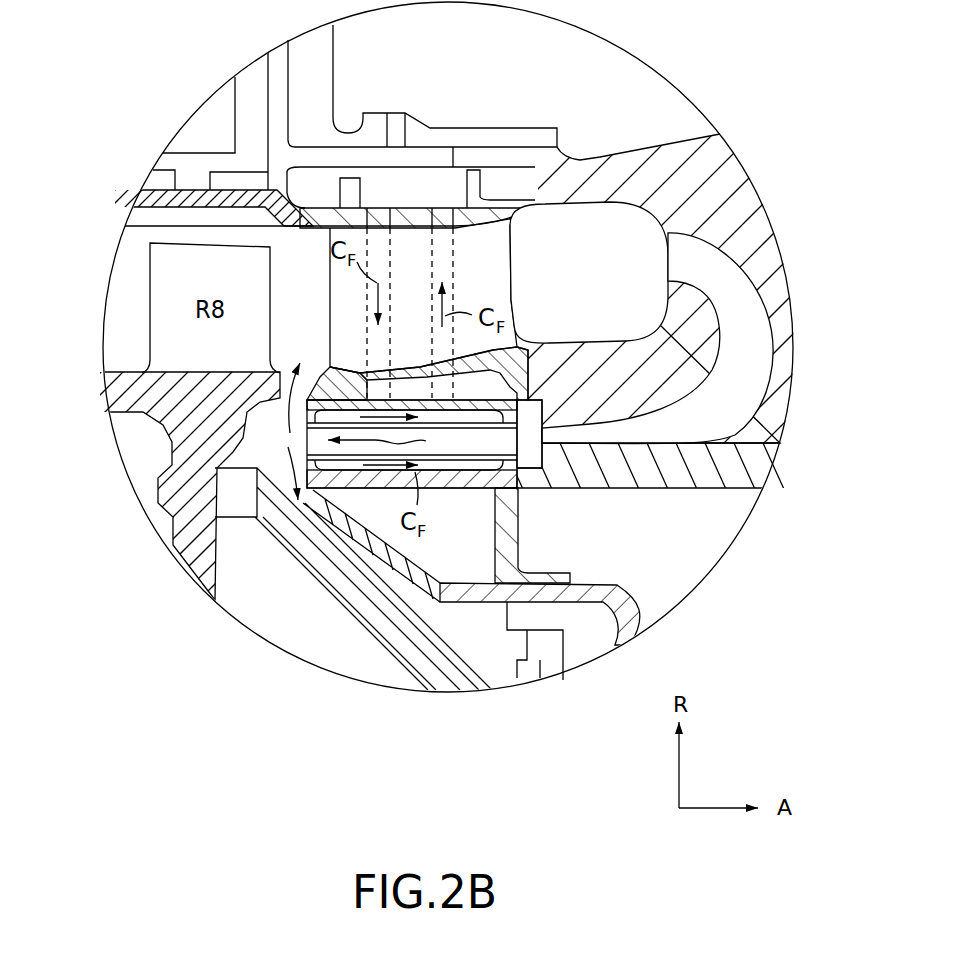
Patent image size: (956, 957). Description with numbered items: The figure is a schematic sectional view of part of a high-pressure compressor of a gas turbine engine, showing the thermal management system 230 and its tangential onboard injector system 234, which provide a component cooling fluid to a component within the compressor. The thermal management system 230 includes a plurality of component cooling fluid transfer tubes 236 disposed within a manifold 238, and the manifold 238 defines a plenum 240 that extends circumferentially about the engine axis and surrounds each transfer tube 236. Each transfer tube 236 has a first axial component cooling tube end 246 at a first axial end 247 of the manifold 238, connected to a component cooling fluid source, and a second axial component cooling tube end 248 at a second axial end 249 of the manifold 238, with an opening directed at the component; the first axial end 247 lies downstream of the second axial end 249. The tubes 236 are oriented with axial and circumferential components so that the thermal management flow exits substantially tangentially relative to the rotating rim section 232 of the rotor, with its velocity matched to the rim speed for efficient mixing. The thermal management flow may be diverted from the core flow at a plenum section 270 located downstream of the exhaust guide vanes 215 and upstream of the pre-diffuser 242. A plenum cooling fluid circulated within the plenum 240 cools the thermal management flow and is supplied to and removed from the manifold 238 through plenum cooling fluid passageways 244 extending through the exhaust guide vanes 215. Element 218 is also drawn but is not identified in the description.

The seal tooth 218 is at (200, 175).
The plenum cooling fluid passageway 244 is at (378, 216).
The pre-diffuser 242 is at (749, 199).
The exhaust guide vane 215 is at (490, 246).
The plenum section 270 is at (610, 304).
The rim section 232 is at (116, 390).
The second axial end 249 is at (307, 440).
The second axial component cooling tube end 248 is at (307, 453).
The manifold 238 is at (320, 460).
The plenum 240 is at (450, 490).
The first axial component cooling tube end 246 is at (542, 458).
The first axial end 247 is at (542, 430).
The component cooling fluid transfer tube 236 is at (482, 490).
The thermal management system 230 is at (362, 497).
The tangential onboard injector system 234 is at (364, 522).